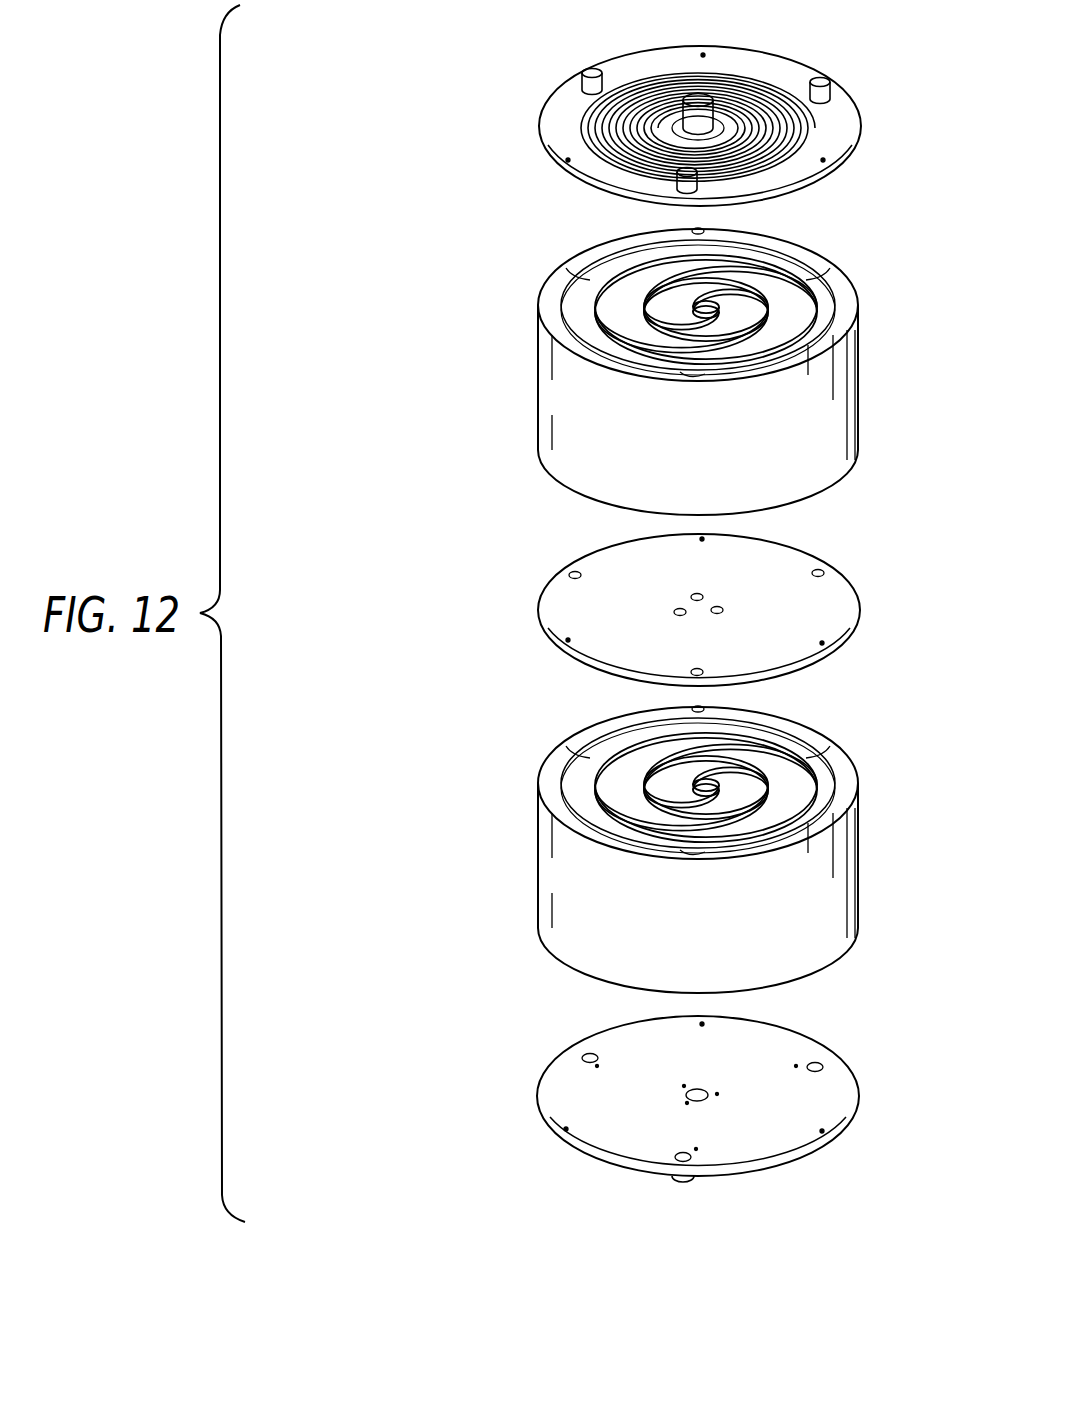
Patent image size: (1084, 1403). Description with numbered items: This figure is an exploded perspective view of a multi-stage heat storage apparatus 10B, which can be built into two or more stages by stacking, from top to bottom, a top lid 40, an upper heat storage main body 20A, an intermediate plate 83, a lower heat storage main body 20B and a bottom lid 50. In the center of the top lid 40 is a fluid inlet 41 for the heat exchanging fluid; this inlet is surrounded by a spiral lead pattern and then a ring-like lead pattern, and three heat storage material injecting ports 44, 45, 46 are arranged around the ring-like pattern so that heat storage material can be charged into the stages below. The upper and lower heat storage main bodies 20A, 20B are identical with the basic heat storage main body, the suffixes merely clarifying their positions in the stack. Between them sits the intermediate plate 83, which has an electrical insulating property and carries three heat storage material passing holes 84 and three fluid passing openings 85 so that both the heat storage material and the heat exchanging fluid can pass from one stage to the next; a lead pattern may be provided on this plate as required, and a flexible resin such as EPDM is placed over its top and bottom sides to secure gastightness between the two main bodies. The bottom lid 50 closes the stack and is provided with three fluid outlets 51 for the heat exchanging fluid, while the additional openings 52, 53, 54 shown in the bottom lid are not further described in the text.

The heat storage apparatus 10B is at (360, 483).
The top lid 40 is at (545, 130).
The fluid inlet 41 is at (702, 98).
The heat storage material injecting port 44 is at (825, 78).
The heat storage material injecting port 45 is at (680, 180).
The heat storage material injecting port 46 is at (592, 70).
The upper heat storage main body 20A is at (558, 405).
The intermediate plate 83 is at (555, 620).
The heat storage material passing hole 84 is at (712, 612).
The fluid passing opening 85 is at (572, 570).
The lower heat storage main body 20B is at (558, 897).
The bottom lid 50 is at (540, 1098).
The fluid outlet 51 is at (704, 1098).
The hole 52 is at (822, 1066).
The hole 53 is at (680, 1160).
The hole 54 is at (585, 1055).